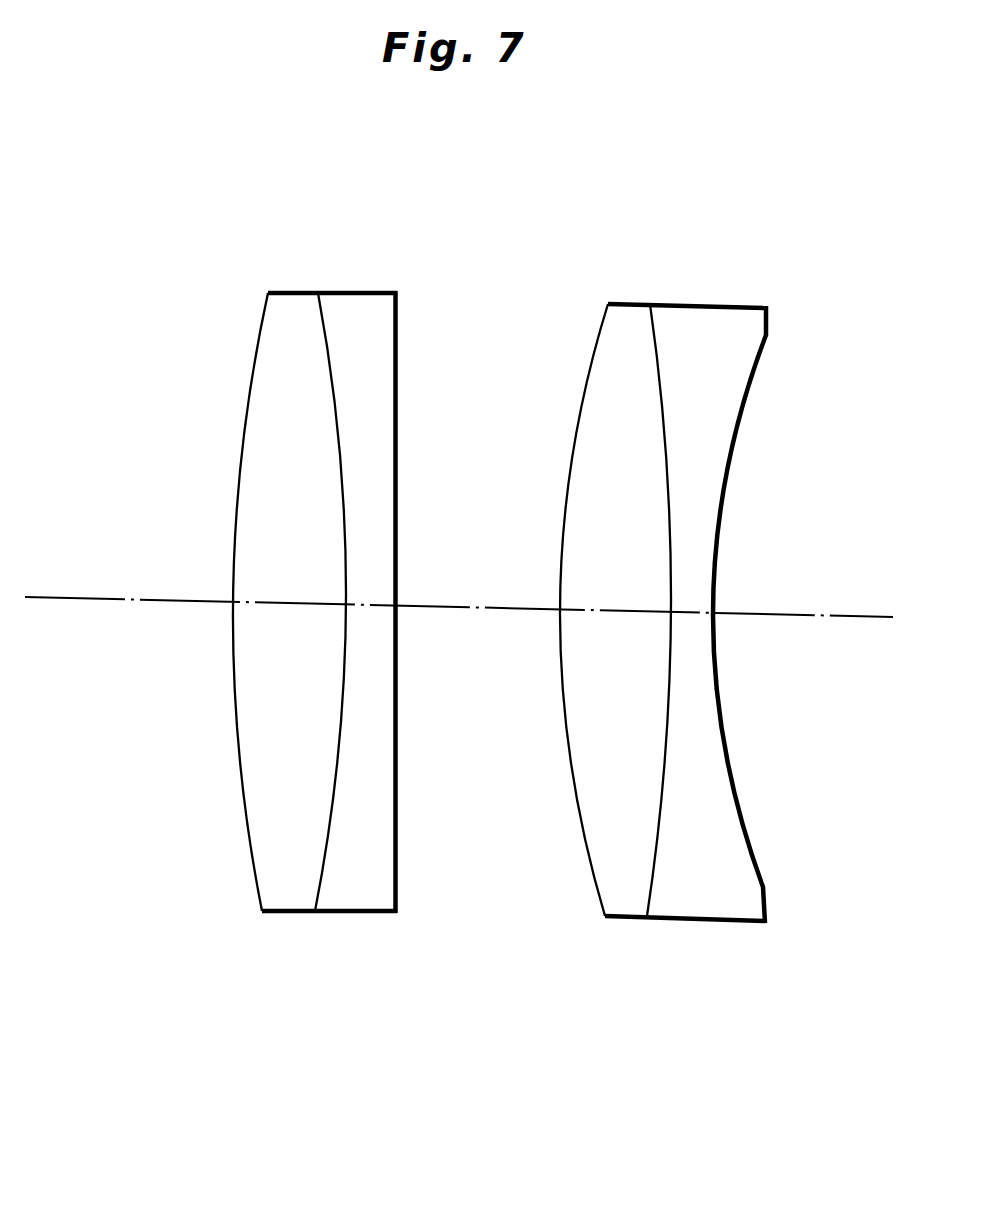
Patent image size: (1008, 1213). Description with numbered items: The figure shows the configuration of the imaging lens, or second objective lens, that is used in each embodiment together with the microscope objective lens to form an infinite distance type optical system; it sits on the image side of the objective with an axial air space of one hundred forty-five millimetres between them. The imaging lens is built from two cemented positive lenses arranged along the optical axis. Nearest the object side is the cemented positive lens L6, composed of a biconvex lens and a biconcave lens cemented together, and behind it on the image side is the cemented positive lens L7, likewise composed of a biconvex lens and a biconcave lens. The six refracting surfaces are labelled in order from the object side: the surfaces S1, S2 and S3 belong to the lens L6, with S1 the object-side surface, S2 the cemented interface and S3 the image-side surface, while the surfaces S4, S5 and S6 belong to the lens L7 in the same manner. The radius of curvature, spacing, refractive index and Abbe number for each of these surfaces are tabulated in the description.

The cemented positive lens L6 is at (331, 626).
The cemented positive lens L7 is at (676, 639).
The lens surface S1 is at (255, 352).
The lens surface S2 is at (327, 338).
The lens surface S3 is at (397, 365).
The lens surface S4 is at (582, 410).
The lens surface S5 is at (662, 392).
The lens surface S6 is at (737, 432).